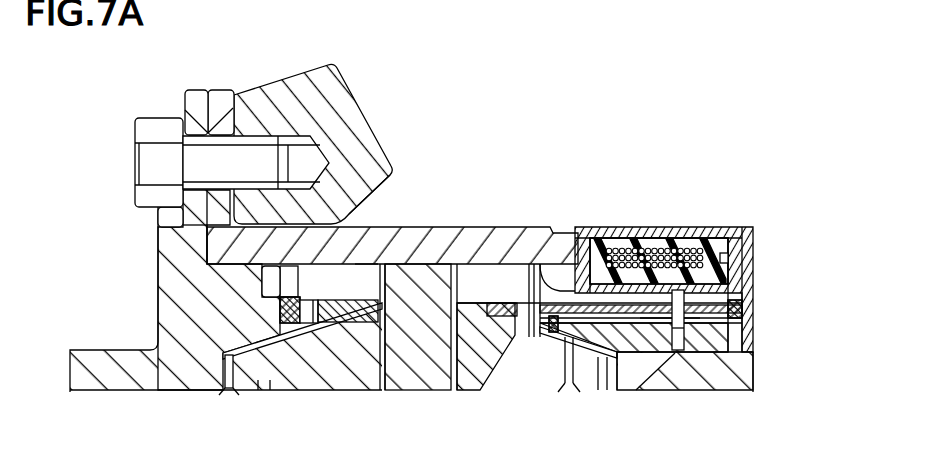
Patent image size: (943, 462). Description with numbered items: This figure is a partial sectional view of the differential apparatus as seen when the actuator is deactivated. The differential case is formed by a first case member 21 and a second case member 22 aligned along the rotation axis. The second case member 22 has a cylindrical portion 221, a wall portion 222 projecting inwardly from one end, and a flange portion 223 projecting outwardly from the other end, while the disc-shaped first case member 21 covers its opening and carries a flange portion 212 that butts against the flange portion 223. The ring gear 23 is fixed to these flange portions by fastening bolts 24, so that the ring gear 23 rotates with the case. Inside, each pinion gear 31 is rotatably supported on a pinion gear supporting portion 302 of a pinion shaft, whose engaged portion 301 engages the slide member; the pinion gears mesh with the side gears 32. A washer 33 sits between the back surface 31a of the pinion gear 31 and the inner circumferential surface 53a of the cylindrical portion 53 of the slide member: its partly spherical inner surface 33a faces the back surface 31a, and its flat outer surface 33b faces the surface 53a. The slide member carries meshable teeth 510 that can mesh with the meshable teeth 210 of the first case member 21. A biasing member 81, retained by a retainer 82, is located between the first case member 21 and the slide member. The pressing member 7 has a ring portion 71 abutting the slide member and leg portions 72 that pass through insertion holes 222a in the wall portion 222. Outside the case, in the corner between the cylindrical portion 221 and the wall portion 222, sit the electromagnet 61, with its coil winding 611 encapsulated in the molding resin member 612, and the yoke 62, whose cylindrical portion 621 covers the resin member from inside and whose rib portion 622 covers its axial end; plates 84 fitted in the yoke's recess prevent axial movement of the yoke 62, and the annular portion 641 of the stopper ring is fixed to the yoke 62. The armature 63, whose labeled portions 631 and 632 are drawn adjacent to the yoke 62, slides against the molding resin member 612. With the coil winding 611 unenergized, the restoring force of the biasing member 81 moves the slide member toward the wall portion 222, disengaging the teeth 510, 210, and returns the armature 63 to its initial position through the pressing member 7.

The first case member 21 is at (157, 333).
The second case member 22 is at (757, 373).
The ring gear 23 is at (344, 79).
The fastening bolt 24 is at (134, 164).
The flange portion 212 is at (192, 91).
The flange portion 223 is at (219, 91).
The cylindrical portion 221 is at (469, 232).
The meshable teeth 510 is at (285, 279).
The meshable teeth 210 is at (273, 288).
The retainer 82 is at (302, 328).
The biasing member 81 is at (314, 328).
The washer 33 is at (463, 303).
The pinion gear supporting portion 302 is at (406, 383).
The outer surface 33b is at (377, 266).
The engaged portion 301 is at (405, 282).
The cylindrical portion 53 is at (346, 214).
The inner circumferential surface 53a is at (364, 270).
The pinion gear 31 is at (476, 382).
The back surface 31a is at (484, 306).
The ring portion 71 is at (547, 262).
The inner surface 33a is at (536, 262).
The armature 63 is at (744, 228).
The electromagnet 61 is at (760, 178).
The coil winding 611 is at (667, 243).
The molding resin member 612 is at (704, 250).
The annular portion 641 is at (730, 262).
The case top wall 631 is at (629, 232).
The rib portion 622 is at (581, 256).
The leg portion 72 is at (738, 310).
The case end portion 632 is at (748, 313).
The yoke 62 is at (586, 324).
The cylindrical portion 621 is at (658, 320).
The wall portion 222 is at (636, 339).
The insertion hole 222a is at (549, 325).
The plate 84 is at (683, 331).
The pressing member 7 is at (602, 334).
The side gear 32 is at (264, 385).